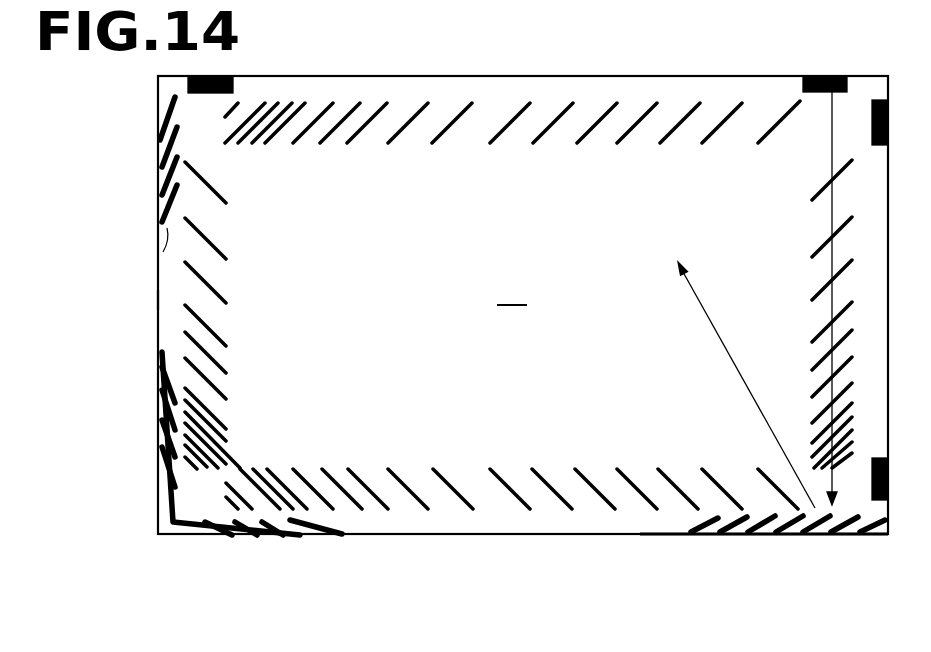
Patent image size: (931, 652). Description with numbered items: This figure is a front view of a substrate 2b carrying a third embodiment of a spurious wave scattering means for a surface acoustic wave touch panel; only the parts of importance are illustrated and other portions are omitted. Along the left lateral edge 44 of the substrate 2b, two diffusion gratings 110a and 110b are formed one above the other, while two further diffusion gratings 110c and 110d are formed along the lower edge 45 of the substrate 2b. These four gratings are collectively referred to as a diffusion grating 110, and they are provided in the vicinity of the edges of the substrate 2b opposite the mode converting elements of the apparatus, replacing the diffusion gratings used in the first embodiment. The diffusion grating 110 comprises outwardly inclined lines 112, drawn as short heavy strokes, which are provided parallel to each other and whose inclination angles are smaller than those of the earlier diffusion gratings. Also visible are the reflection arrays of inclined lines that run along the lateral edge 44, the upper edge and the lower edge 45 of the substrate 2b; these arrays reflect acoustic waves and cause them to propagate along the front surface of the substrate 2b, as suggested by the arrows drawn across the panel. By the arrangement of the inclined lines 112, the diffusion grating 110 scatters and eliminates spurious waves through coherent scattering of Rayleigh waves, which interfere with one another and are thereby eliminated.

The substrate 2b is at (512, 292).
The diffusion grating 110 is at (455, 347).
The diffusion grating 110a is at (156, 177).
The diffusion grating 110b is at (155, 423).
The diffusion grating 110c is at (264, 545).
The diffusion grating 110d is at (752, 545).
The inclined lines 112 is at (159, 262).
The lateral edge 44 is at (159, 298).
The lower edge 45 is at (548, 534).